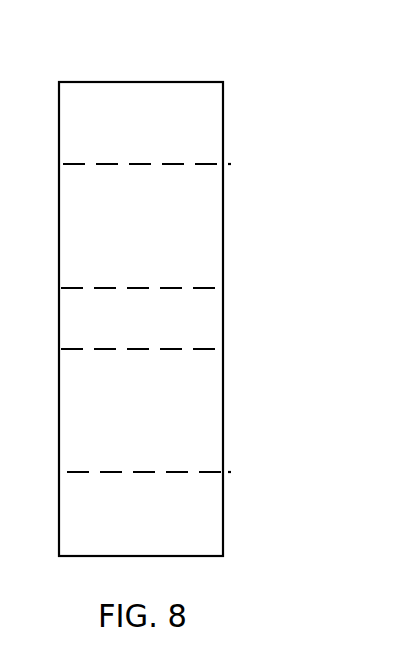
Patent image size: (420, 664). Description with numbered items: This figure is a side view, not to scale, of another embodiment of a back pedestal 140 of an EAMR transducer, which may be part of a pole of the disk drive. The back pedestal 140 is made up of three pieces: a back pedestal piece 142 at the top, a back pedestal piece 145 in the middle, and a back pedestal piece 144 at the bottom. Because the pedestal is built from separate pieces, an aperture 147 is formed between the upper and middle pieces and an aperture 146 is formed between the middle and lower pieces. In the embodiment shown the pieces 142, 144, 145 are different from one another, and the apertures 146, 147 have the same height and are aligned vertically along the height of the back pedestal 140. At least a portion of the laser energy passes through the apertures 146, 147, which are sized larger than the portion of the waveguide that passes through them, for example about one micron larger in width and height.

The back pedestal 140 is at (178, 44).
The back pedestal piece 142 is at (298, 100).
The aperture 147 is at (288, 243).
The back pedestal piece 145 is at (259, 319).
The aperture 146 is at (281, 420).
The back pedestal piece 144 is at (268, 518).